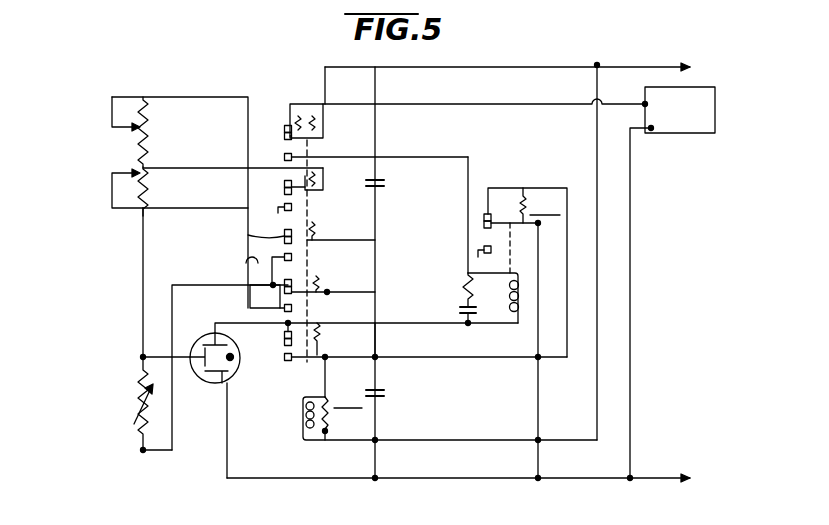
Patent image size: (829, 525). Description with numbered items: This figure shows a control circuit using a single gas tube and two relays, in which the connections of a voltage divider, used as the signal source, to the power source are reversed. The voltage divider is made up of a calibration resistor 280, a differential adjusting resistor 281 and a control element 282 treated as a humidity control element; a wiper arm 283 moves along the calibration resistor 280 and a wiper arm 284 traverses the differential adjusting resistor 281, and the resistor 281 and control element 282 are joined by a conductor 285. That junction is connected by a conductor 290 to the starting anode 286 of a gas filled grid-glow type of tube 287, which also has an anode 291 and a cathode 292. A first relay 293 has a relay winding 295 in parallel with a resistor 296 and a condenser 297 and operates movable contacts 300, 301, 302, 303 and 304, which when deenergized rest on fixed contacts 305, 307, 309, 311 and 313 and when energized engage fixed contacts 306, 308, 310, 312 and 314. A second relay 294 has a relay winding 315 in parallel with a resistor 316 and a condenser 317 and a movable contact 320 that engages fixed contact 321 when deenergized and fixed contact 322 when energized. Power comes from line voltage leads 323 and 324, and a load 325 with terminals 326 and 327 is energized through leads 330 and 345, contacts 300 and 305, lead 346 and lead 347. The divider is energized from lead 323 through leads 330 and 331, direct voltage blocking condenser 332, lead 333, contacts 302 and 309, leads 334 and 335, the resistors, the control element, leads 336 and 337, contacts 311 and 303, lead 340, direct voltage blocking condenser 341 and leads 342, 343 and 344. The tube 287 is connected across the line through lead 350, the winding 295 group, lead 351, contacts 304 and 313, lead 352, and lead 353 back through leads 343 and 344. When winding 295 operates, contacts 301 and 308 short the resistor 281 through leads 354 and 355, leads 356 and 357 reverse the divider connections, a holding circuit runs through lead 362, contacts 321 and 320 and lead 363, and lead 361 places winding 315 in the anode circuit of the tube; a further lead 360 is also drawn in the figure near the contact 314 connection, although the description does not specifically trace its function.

The calibration resistor 280 is at (151, 130).
The differential adjusting resistor 281 is at (148, 186).
The control element 282 is at (131, 405).
The wiper arm 283 is at (107, 130).
The wiper arm 284 is at (109, 174).
The conductor 285 is at (143, 272).
The starting anode 286 is at (196, 347).
The gas filled grid-glow type of tube 287 is at (228, 384).
The conductor 290 is at (143, 352).
The anode 291 is at (230, 337).
The cathode 292 is at (212, 383).
The first relay 293 is at (339, 416).
The second relay 294 is at (540, 205).
The relay winding 295 is at (302, 428).
The resistor 296 is at (327, 429).
The condenser 297 is at (327, 434).
The movable contact 300 is at (306, 121).
The movable contact 301 is at (320, 182).
The movable contact 302 is at (317, 237).
The movable contact 303 is at (331, 282).
The movable contact 304 is at (323, 329).
The fixed contact 305 is at (284, 126).
The fixed contact 306 is at (282, 157).
The fixed contact 307 is at (280, 181).
The fixed contact 308 is at (285, 207).
The fixed contact 309 is at (284, 230).
The fixed contact 310 is at (292, 255).
The fixed contact 311 is at (294, 283).
The fixed contact 312 is at (294, 310).
The fixed contact 313 is at (282, 338).
The fixed contact 314 is at (284, 360).
The relay winding 315 is at (516, 324).
The resistor 316 is at (461, 277).
The condenser 317 is at (460, 310).
The movable contact 320 is at (494, 216).
The fixed contact 321 is at (485, 214).
The fixed contact 322 is at (490, 260).
The line voltage lead 323 is at (634, 66).
The line voltage lead 324 is at (657, 478).
The load 325 is at (718, 113).
The terminal 326 is at (644, 93).
The terminal 327 is at (655, 132).
The lead 330 is at (462, 67).
The lead 331 is at (375, 133).
The direct voltage blocking condenser 332 is at (384, 183).
The lead 333 is at (376, 210).
The lead 334 is at (247, 234).
The lead 335 is at (195, 97).
The lead 336 is at (172, 280).
The lead 337 is at (267, 296).
The lead 340 is at (377, 322).
The direct voltage blocking condenser 341 is at (378, 390).
The lead 342 is at (379, 406).
The lead 343 is at (407, 478).
The lead 344 is at (562, 478).
The lead 345 is at (326, 64).
The lead 346 is at (472, 104).
The lead 347 is at (630, 308).
The lead 350 is at (597, 395).
The lead 351 is at (326, 374).
The lead 352 is at (234, 322).
The lead 353 is at (268, 478).
The lead 354 is at (194, 167).
The lead 355 is at (209, 206).
The lead 356 is at (247, 250).
The lead 357 is at (248, 263).
The conductor 360 is at (399, 354).
The lead 361 is at (465, 232).
The lead 362 is at (444, 358).
The lead 363 is at (536, 392).